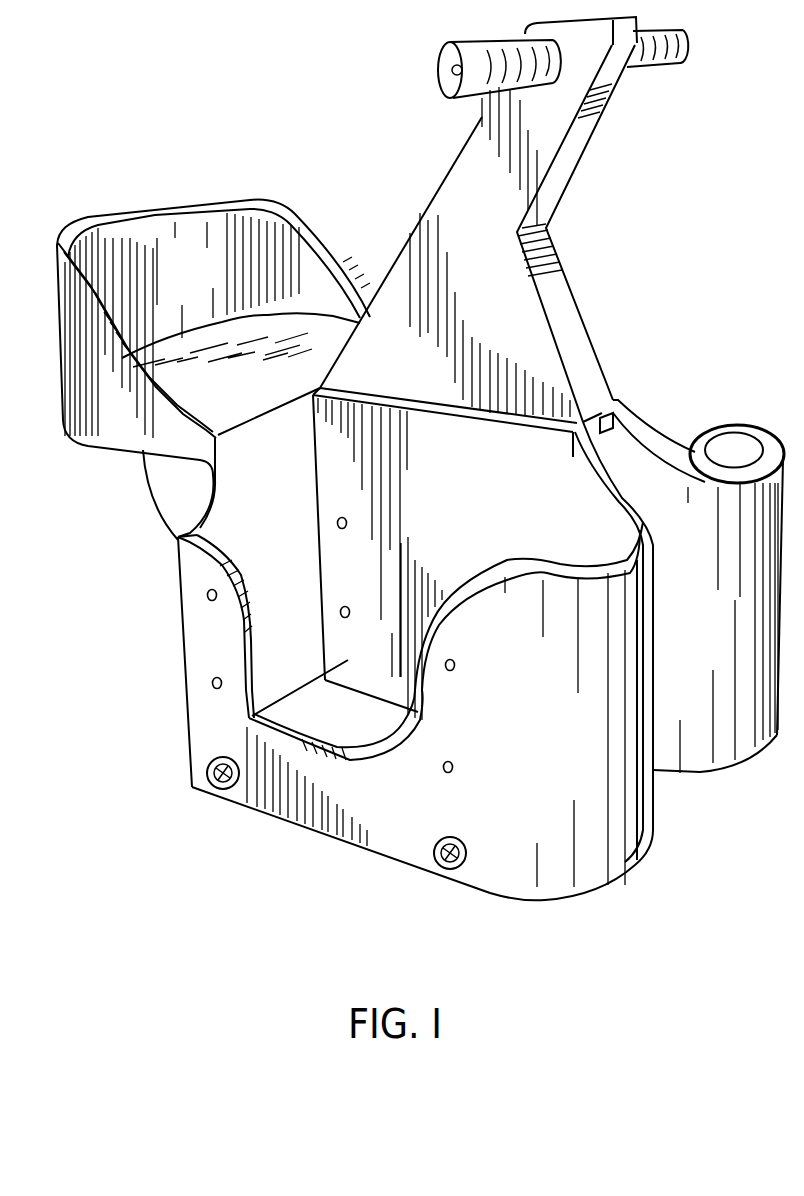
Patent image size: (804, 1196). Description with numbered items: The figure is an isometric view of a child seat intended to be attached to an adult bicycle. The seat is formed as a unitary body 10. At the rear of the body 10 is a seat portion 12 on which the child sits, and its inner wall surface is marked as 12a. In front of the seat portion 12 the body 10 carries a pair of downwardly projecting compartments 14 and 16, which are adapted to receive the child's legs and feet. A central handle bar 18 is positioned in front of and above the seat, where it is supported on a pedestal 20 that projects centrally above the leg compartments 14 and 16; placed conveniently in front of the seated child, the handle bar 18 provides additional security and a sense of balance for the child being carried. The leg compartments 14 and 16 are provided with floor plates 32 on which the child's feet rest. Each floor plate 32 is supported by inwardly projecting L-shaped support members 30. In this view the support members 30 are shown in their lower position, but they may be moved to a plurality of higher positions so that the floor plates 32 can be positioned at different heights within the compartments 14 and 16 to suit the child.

The unitary body 10 is at (282, 163).
The seat portion 12 is at (177, 387).
The tray back wall 12a is at (173, 294).
The leg compartment 14 is at (250, 718).
The leg compartment 16 is at (717, 450).
The central handle bar 18 is at (685, 47).
The pedestal 20 is at (567, 173).
The L-shaped support member 30 is at (238, 792).
The floor plate 32 is at (368, 731).